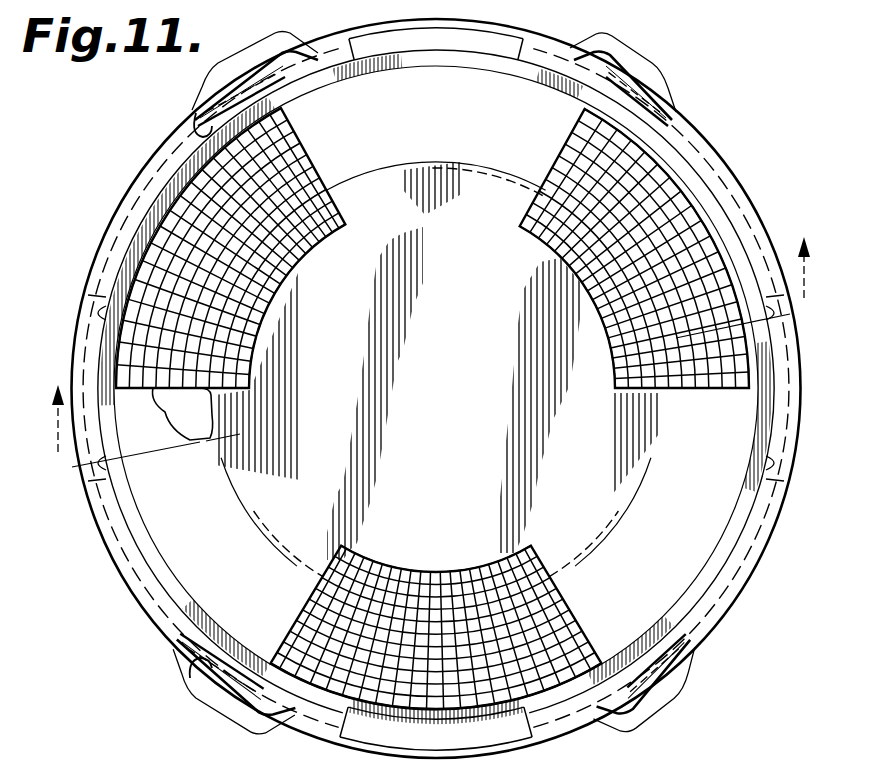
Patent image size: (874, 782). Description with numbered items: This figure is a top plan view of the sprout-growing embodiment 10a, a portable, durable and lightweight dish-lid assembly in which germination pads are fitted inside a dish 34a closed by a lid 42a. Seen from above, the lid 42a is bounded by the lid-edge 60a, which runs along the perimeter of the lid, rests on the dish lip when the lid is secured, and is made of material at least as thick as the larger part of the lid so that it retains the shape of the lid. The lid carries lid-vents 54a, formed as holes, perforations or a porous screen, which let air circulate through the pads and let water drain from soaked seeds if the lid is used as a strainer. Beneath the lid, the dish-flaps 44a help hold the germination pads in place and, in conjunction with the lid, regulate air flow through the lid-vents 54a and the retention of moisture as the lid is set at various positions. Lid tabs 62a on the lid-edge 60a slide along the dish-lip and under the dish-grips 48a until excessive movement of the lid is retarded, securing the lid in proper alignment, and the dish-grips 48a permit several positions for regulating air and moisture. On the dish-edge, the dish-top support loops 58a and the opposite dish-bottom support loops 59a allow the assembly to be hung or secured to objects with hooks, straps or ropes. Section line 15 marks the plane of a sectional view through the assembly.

The embodiment 10a is at (748, 154).
The section line 15 is at (435, 361).
The dish 34a is at (140, 630).
The lid 42a is at (684, 566).
The dish-flaps 44a is at (346, 197).
The dish-grips 48a is at (97, 337).
The lid-vents 54a is at (530, 228).
The dish-top support loops 58a is at (287, 22).
The dish-bottom support loops 59a is at (253, 728).
The lid-edge 60a is at (158, 208).
The lid tabs 62a is at (197, 117).